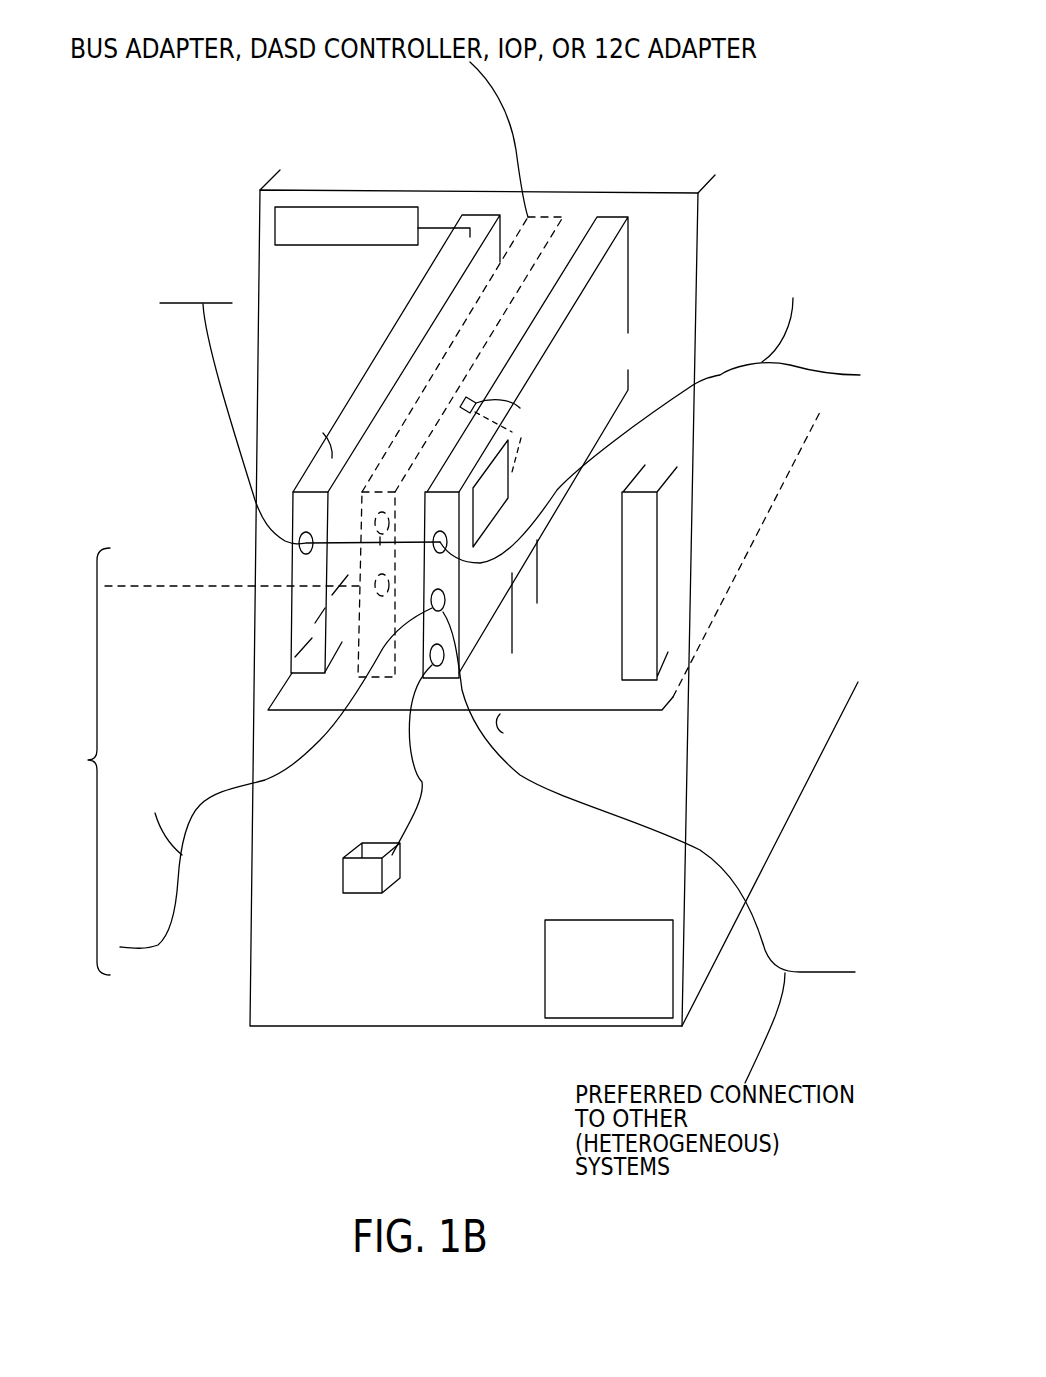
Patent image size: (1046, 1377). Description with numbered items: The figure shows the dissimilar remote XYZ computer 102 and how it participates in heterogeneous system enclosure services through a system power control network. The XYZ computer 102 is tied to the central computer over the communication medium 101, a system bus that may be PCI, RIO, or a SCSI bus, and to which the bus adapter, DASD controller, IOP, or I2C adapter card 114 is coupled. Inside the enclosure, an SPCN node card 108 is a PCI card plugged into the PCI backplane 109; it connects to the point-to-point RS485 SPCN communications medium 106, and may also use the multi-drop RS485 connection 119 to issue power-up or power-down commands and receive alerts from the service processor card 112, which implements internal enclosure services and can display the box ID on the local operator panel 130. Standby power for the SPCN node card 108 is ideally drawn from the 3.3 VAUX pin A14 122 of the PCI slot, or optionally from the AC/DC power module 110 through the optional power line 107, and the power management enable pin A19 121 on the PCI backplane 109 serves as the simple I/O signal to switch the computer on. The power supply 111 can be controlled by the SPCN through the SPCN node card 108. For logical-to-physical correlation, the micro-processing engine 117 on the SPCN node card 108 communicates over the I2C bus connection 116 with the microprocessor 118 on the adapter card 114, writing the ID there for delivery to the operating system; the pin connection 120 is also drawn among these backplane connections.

The communication medium 101 is at (208, 598).
The XYZ computer 102 is at (262, 192).
The SPCN communications medium 106 is at (147, 946).
The optional power line 107 is at (423, 782).
The SPCN node card 108 is at (603, 222).
The PCI backplane 109 is at (690, 648).
The AC/DC power module 110 is at (400, 856).
The power supply 111 is at (545, 962).
The service processor card 112 is at (402, 333).
The bus adapter, DASD controller, IOP, or I2C adapter card 114 is at (515, 127).
The I2C bus connection 116 is at (520, 440).
The micro-processing engine 117 is at (508, 488).
The microprocessor 118 is at (466, 397).
The multi-drop RS485 connection 119 is at (215, 372).
The pin connection 120 is at (553, 520).
The PME pin A19 121 is at (522, 688).
The 3.3 VAUX pin A14 122 is at (545, 602).
The operator panel 130 is at (283, 245).